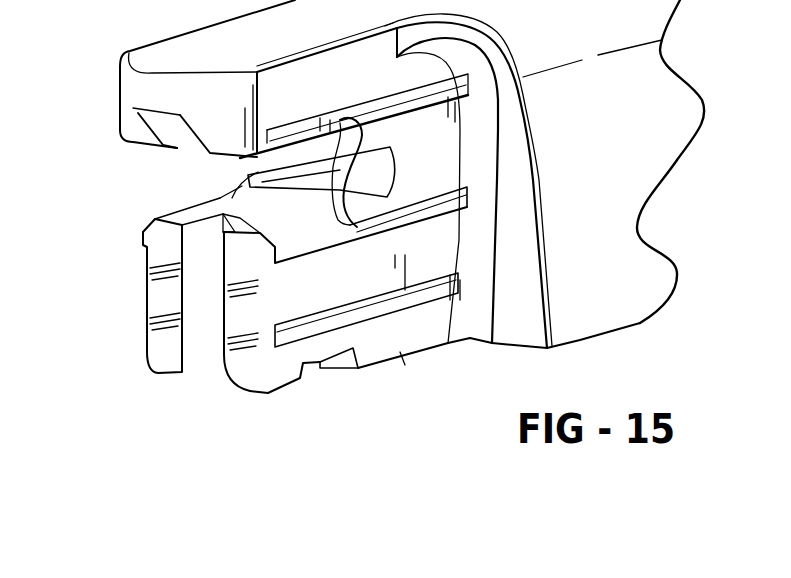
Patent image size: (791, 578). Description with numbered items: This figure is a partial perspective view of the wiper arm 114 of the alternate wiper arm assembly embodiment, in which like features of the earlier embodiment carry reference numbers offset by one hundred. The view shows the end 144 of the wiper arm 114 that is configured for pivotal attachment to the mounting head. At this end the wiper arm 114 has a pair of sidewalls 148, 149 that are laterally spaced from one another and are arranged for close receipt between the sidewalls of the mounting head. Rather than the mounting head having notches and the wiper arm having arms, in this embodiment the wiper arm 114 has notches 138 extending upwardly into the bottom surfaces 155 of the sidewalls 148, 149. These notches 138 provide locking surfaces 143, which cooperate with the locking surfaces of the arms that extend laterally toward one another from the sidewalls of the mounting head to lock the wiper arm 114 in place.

The wiper arm 114 is at (580, 340).
The notches 138 is at (223, 382).
The locking surfaces 143 is at (342, 362).
The end 144 is at (140, 95).
The sidewall 148 is at (145, 292).
The sidewall 149 is at (408, 345).
The bottom surfaces 155 is at (172, 376).